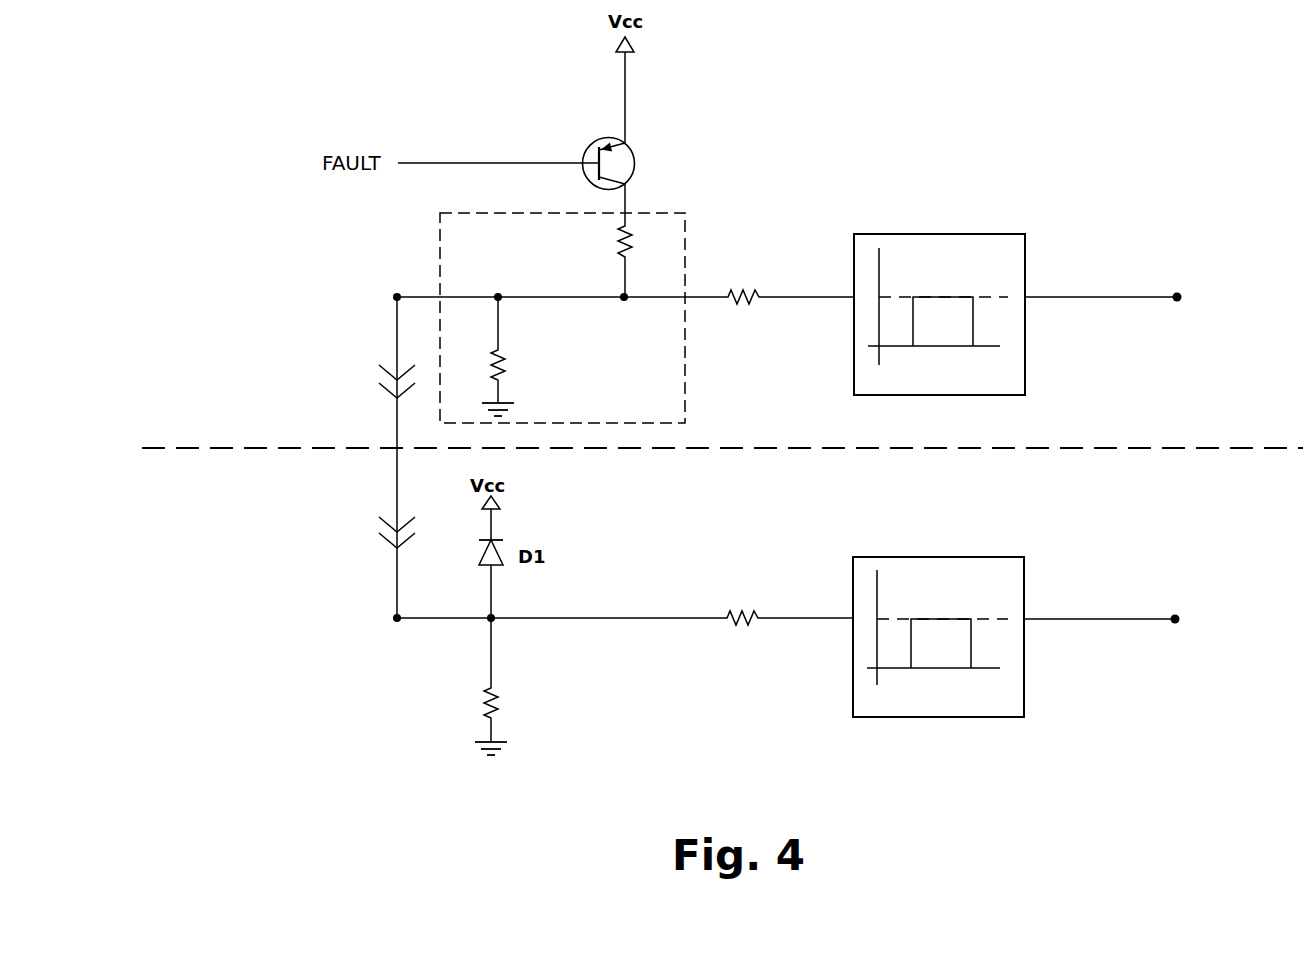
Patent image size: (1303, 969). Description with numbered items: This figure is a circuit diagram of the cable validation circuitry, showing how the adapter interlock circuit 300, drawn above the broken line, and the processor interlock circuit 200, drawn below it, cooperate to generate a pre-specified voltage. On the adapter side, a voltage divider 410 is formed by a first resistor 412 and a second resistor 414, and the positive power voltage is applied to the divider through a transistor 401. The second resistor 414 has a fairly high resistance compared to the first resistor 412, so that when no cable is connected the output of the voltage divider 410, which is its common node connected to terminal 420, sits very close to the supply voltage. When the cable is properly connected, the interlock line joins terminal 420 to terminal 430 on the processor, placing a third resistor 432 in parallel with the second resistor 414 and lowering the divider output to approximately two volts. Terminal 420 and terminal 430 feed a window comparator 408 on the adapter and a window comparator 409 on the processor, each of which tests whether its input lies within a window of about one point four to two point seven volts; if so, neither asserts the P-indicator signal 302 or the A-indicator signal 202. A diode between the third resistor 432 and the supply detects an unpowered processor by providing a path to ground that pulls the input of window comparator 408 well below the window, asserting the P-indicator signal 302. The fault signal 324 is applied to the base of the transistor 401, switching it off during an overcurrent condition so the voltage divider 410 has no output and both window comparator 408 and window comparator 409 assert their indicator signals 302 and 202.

The interlock circuit 300 is at (198, 204).
The interlock circuit 200 is at (196, 720).
The fault signal 324 is at (445, 163).
The transistor Q1 401 is at (631, 153).
The resistor R1 412 is at (617, 246).
The resistor R2 414 is at (505, 365).
The voltage divider 410 is at (685, 370).
The window comparator 408 is at (905, 234).
The window comparator 409 is at (903, 557).
The P-indicator signal 302 is at (1129, 298).
The A-indicator signal 202 is at (1127, 620).
The terminal 420 is at (397, 297).
The terminal 430 is at (397, 618).
The resistor R3 432 is at (485, 703).